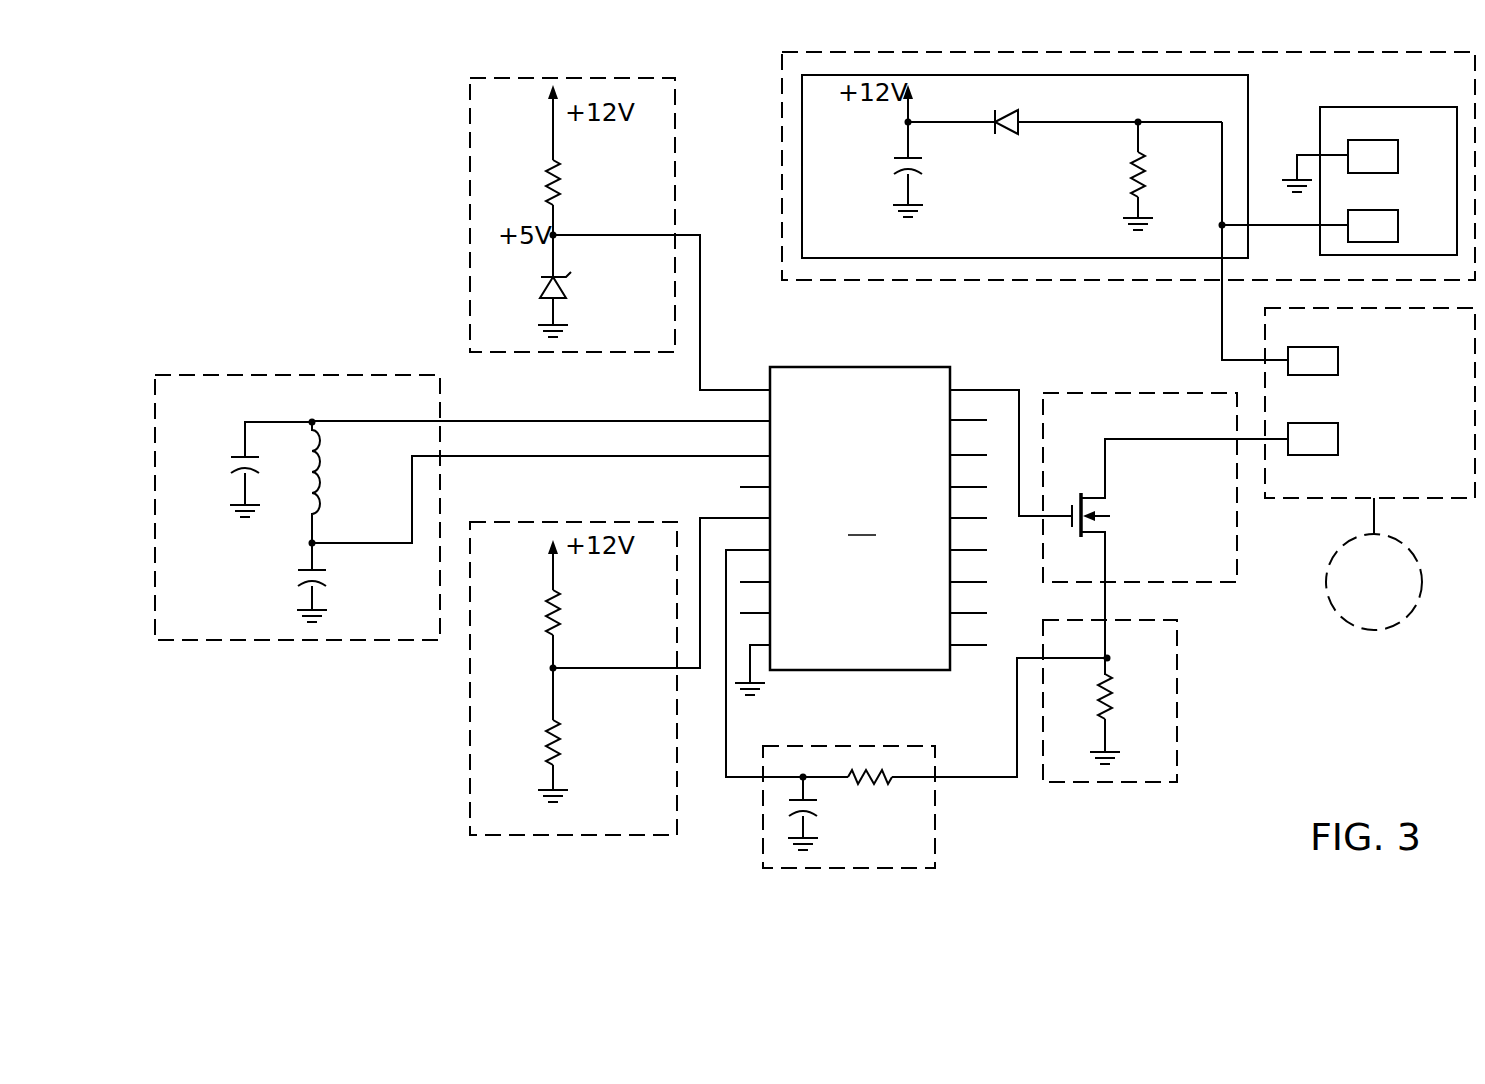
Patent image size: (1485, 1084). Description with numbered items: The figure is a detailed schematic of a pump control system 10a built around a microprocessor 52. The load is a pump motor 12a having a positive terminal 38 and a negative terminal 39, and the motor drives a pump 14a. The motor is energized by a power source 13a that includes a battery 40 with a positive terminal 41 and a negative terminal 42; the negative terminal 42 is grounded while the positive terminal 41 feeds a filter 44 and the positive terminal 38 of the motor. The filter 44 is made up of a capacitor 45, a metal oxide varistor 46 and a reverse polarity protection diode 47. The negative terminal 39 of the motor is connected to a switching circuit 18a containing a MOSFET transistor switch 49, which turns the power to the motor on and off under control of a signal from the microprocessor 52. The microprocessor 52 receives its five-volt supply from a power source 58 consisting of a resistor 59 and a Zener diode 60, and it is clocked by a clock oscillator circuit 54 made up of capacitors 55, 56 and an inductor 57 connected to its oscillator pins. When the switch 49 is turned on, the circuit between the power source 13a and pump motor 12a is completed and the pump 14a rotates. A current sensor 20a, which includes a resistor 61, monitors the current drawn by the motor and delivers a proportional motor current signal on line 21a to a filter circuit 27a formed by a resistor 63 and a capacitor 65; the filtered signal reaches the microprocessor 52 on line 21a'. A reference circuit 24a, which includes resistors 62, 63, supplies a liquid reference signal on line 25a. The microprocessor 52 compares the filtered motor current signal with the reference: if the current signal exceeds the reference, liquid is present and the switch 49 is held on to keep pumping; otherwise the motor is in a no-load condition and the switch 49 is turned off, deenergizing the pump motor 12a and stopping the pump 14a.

The pump control system 10a is at (323, 67).
The power source 58 is at (470, 117).
The resistor 59 is at (545, 189).
The Zener diode 60 is at (540, 290).
The power source 13a is at (782, 135).
The reverse polarity protection diode 47 is at (998, 112).
The capacitor 45 is at (925, 176).
The metal oxide varistor 46 is at (1130, 180).
The filter 44 is at (1217, 106).
The battery 40 is at (1457, 107).
The negative terminal 42 is at (1398, 152).
The positive terminal 41 is at (1398, 226).
The microprocessor 52 is at (878, 670).
The line 25a is at (715, 517).
The line 21a' is at (776, 663).
The line 21a is at (999, 717).
The reference circuit 24a is at (640, 835).
The resistor 63 is at (541, 608).
The resistor 62 is at (540, 743).
The filter circuit 27a is at (935, 857).
The capacitor 65 is at (824, 808).
The switching circuit 18a is at (1128, 393).
The MOSFET transistor switch 49 is at (1110, 505).
The current sensor 20a is at (1145, 783).
The resistor 61 is at (1097, 700).
The pump motor 12a is at (1442, 452).
The positive terminal 38 is at (1340, 360).
The negative terminal 39 is at (1323, 455).
The pump 14a is at (1412, 608).
The clock oscillator circuit 54 is at (437, 375).
The capacitor 55 is at (229, 453).
The inductor 57 is at (306, 472).
The capacitor 56 is at (287, 581).